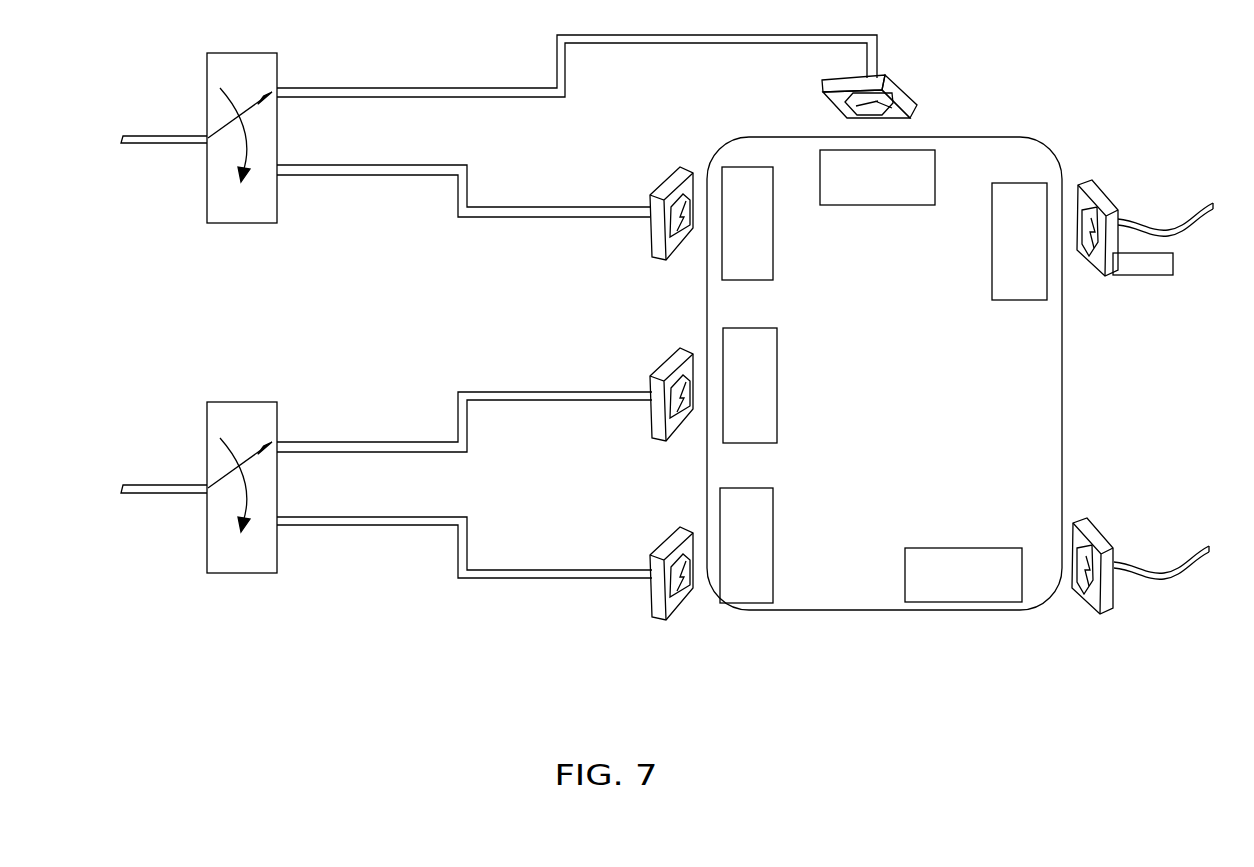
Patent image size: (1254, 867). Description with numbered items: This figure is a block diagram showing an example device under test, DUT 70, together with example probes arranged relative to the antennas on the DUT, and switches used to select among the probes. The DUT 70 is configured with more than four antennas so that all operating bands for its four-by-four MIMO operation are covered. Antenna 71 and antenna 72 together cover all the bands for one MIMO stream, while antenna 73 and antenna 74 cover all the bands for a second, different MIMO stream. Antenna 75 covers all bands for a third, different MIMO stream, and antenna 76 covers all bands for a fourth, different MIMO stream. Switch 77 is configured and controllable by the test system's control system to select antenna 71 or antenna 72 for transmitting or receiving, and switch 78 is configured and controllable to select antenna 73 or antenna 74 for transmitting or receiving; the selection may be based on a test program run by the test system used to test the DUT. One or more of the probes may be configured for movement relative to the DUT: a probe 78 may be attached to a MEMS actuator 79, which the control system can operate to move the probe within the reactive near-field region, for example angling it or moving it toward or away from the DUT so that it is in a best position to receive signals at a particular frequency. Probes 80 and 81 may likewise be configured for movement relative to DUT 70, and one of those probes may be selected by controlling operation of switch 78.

The DUT 70 is at (843, 597).
The antenna 71 is at (745, 165).
The antenna 72 is at (925, 150).
The antenna 73 is at (735, 592).
The antenna 74 is at (723, 345).
The antenna 75 is at (988, 603).
The antenna 76 is at (1030, 183).
The switch 77 is at (243, 218).
The switch 78 is at (243, 562).
The MEMS actuator 79 is at (1142, 277).
The probe 80 is at (658, 415).
The probe 81 is at (658, 597).